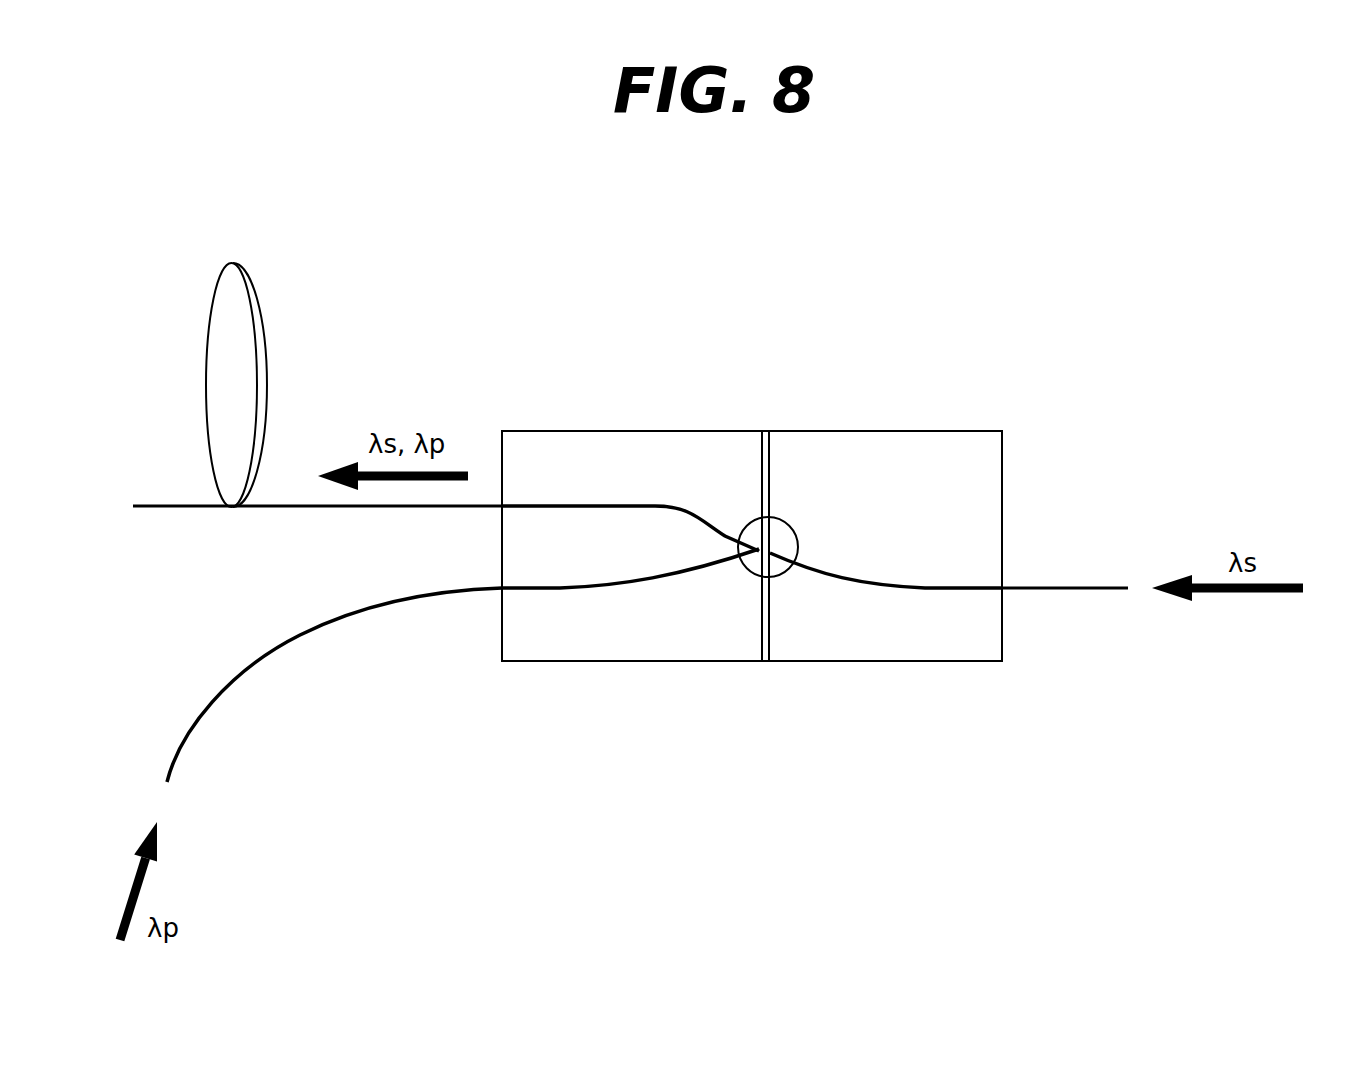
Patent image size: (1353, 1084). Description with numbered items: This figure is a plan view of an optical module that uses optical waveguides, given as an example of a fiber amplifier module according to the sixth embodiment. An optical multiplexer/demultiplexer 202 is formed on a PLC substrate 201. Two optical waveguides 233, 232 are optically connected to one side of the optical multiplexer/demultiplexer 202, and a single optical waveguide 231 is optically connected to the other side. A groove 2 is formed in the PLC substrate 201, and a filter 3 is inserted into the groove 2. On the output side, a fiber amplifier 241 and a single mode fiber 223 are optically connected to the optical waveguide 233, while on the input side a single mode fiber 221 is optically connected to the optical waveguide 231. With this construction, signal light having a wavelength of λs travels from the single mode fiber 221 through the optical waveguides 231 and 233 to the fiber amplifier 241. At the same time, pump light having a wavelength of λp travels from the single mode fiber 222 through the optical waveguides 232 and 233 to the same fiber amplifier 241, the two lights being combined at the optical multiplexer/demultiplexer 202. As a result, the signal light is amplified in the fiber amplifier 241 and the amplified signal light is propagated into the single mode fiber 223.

The PLC substrate 201 is at (910, 428).
The groove 2 is at (767, 455).
The filter 3 is at (768, 497).
The optical multiplexer/demultiplexer 202 is at (780, 573).
The optical waveguide 233 is at (557, 505).
The optical waveguide 232 is at (567, 588).
The optical waveguide 231 is at (883, 582).
The single mode fiber 221 is at (1030, 587).
The single mode fiber 223 is at (153, 505).
The single mode fiber 222 is at (278, 648).
The fiber amplifier 241 is at (240, 262).